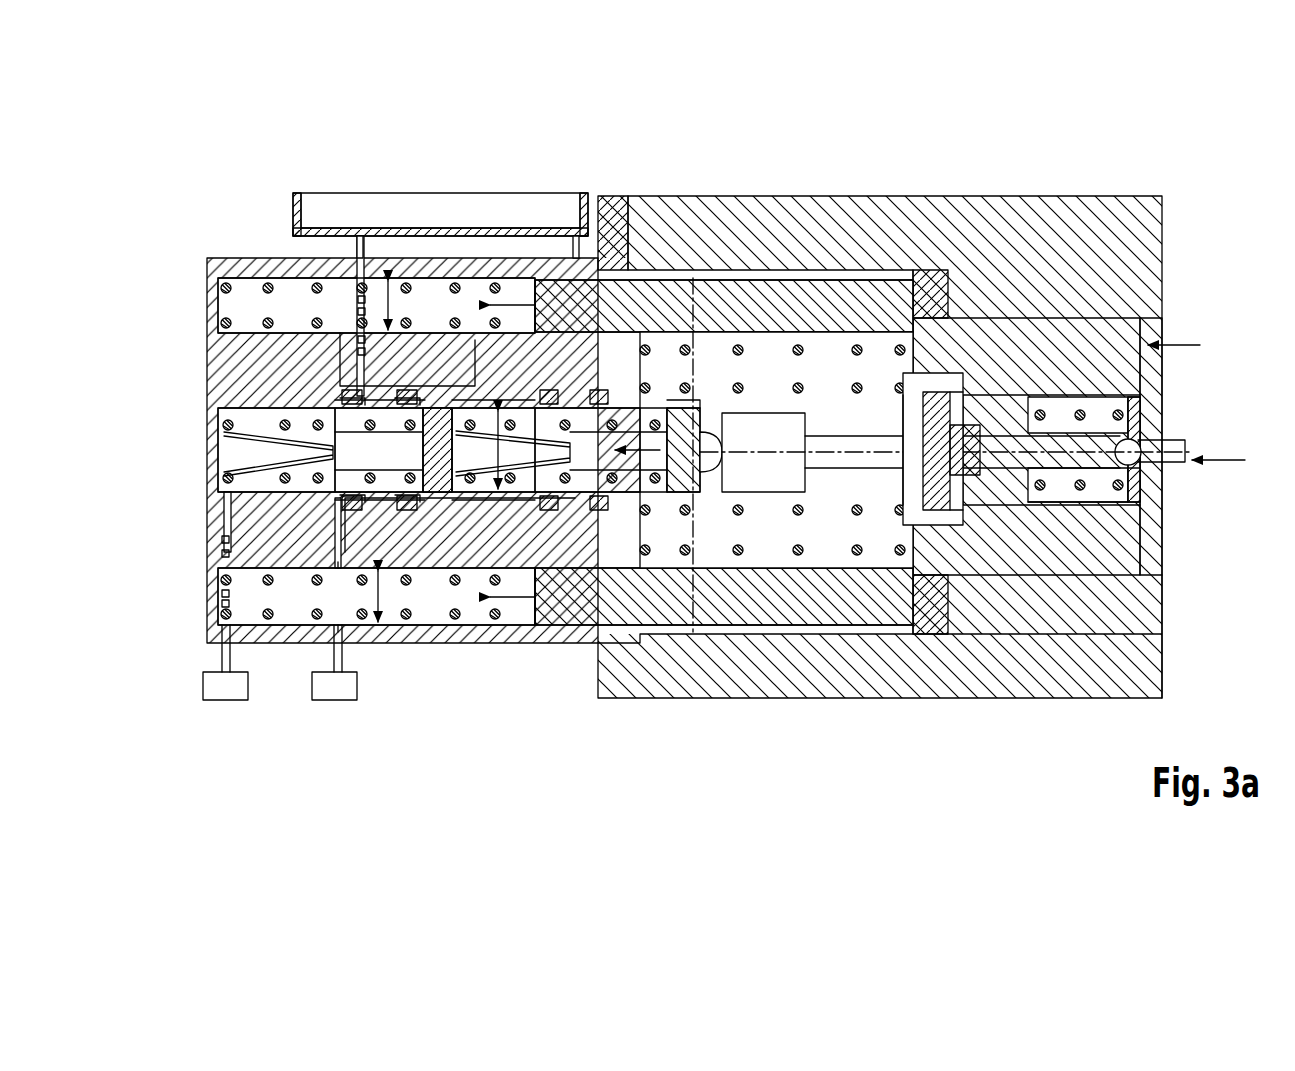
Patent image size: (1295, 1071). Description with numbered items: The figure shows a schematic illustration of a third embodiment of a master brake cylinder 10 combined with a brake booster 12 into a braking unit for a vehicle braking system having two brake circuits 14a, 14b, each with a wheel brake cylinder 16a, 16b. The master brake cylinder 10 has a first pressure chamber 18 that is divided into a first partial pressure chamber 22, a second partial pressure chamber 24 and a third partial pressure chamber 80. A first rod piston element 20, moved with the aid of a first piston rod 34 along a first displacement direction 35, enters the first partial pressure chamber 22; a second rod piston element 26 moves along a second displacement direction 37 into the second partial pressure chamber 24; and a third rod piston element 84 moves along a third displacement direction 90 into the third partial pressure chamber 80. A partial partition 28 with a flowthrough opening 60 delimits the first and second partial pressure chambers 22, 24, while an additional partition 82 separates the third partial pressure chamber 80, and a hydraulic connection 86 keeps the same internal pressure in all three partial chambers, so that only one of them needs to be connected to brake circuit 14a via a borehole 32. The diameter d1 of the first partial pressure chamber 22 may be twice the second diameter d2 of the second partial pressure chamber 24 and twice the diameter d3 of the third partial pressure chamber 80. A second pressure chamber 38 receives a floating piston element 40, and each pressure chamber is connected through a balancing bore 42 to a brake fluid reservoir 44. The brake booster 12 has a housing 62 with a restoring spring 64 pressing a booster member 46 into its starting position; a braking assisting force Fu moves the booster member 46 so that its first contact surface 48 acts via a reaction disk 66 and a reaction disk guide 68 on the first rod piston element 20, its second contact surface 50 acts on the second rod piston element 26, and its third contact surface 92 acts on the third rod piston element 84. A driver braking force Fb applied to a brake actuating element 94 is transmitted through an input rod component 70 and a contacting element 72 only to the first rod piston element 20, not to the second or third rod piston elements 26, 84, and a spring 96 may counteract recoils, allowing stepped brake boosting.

The master brake cylinder 10 is at (185, 520).
The brake booster 12 is at (1050, 124).
The brake circuit 14a is at (335, 652).
The brake circuit 14b is at (224, 652).
The wheel brake cylinder 16a is at (312, 692).
The wheel brake cylinder 16b is at (205, 688).
The first pressure chamber 18 is at (235, 305).
The first rod piston element 20 is at (705, 500).
The first partial pressure chamber 22 is at (580, 350).
The second partial pressure chamber 24 is at (430, 600).
The second rod piston element 26 is at (840, 600).
The partial partition 28 is at (605, 545).
The borehole 32 is at (342, 622).
The first piston rod 34 is at (835, 435).
The first displacement direction 35 is at (660, 470).
The second displacement direction 37 is at (520, 620).
The second pressure chamber 38 is at (235, 448).
The floating piston element 40 is at (365, 510).
The balancing bore 42 is at (600, 262).
The brake fluid reservoir 44 is at (315, 215).
The booster member 46 is at (1140, 365).
The first contact surface 48 is at (985, 400).
The second contact surface 50 is at (930, 520).
The flowthrough opening 60 is at (330, 510).
The housing 62 is at (1100, 650).
The restoring spring 64 is at (695, 385).
The reaction disk 66 is at (965, 500).
The reaction disk guide 68 is at (1012, 400).
The input rod component 70 is at (1100, 440).
The contacting element 72 is at (1030, 510).
The third partial pressure chamber 80 is at (410, 300).
The additional partition 82 is at (455, 355).
The third rod piston element 84 is at (770, 305).
The hydraulic connection 86 is at (340, 370).
The third displacement direction 90 is at (525, 420).
The third contact surface 92 is at (930, 290).
The brake actuating element 94 is at (1140, 470).
The spring 96 is at (1130, 490).
The diameter of first partial pressure chamber d1 is at (498, 405).
The second diameter d2 is at (384, 630).
The diameter of third partial pressure chamber d3 is at (388, 290).
The braking assisting force Fu is at (1193, 329).
The driver braking force Fb is at (1239, 439).